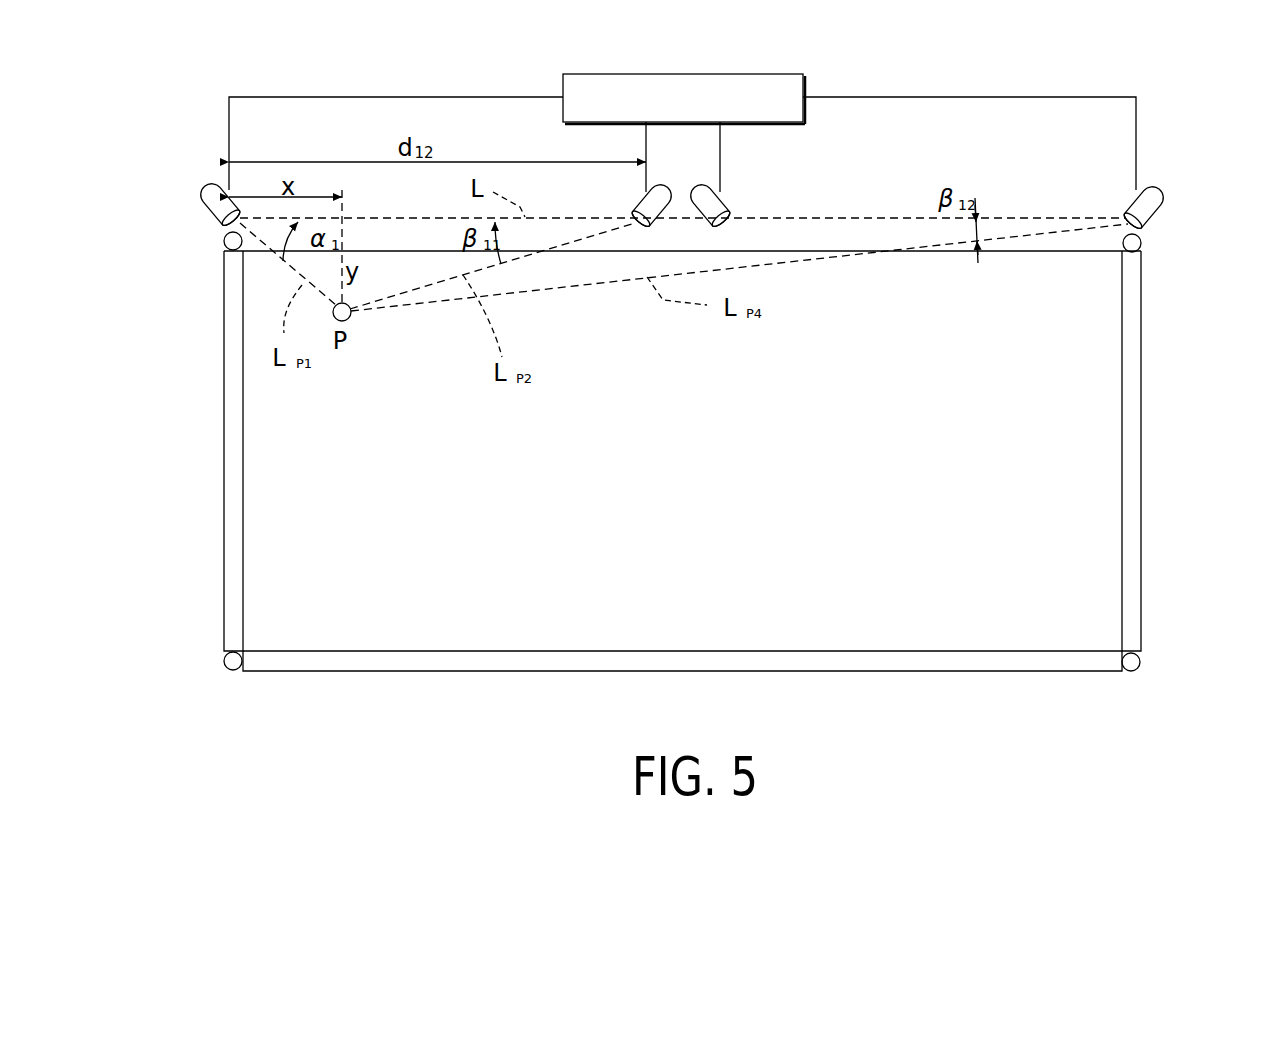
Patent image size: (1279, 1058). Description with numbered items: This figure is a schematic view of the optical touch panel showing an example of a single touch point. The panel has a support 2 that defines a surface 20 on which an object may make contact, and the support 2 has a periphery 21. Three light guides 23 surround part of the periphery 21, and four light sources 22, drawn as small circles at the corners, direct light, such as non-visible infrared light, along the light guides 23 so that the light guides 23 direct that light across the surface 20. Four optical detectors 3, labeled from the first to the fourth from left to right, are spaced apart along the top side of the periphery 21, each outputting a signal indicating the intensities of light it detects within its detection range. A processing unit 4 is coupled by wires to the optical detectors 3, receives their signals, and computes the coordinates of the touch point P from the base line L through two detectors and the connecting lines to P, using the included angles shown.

The support 2 is at (680, 487).
The optical detector 3 is at (208, 195).
The processing unit 4 is at (683, 73).
The surface 20 is at (271, 612).
The periphery 21 is at (1043, 253).
The light source 22 is at (226, 240).
The light guide 23 is at (236, 535).